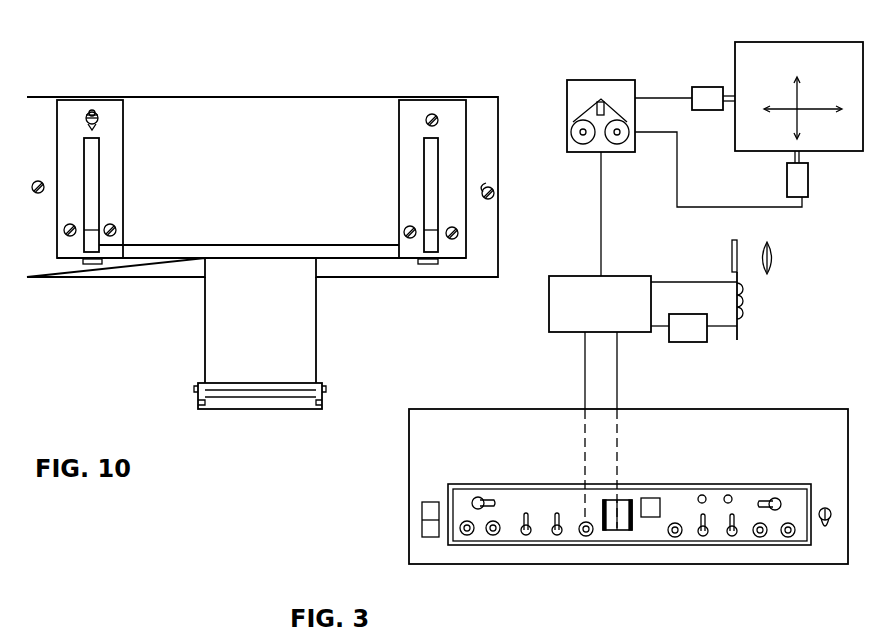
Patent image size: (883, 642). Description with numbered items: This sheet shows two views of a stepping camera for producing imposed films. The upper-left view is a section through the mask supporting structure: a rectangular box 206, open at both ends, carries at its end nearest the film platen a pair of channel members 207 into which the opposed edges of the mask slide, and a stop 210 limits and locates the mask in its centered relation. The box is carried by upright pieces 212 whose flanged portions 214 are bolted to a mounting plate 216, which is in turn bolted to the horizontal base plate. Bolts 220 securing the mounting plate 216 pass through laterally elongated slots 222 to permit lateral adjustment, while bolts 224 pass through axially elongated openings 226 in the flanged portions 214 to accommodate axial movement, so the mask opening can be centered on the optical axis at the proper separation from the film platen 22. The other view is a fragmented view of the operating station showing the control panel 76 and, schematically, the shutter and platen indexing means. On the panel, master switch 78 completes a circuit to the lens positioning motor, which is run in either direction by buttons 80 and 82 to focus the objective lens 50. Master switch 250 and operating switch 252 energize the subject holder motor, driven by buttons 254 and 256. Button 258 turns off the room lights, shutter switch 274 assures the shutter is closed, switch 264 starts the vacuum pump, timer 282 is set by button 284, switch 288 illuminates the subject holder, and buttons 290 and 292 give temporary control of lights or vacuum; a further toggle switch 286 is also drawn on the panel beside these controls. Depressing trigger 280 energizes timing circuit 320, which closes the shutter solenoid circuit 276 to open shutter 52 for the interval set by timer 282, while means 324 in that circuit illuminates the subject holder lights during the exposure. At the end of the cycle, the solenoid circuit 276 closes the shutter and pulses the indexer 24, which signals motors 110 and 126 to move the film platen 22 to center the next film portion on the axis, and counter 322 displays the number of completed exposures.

In FIG. 3, the film platen 22 is at (782, 40).
In FIG. 3, the indexer 24 is at (598, 80).
In FIG. 3, the platen drive motor 126 is at (710, 87).
In FIG. 3, the platen drive motor 110 is at (808, 183).
In FIG. 3, the timing circuit 320 is at (562, 333).
In FIG. 3, the shutter 52 is at (731, 245).
In FIG. 3, the objective lens 50 is at (778, 252).
In FIG. 3, the shutter solenoid circuit 276 is at (745, 316).
In FIG. 3, the light control means 324 is at (692, 342).
In FIG. 3, the control panel 76 is at (487, 408).
In FIG. 3, the master switch 78 is at (475, 497).
In FIG. 3, the button 258 is at (421, 527).
In FIG. 3, the button 80 is at (463, 538).
In FIG. 3, the button 82 is at (492, 538).
In FIG. 3, the switch 264 is at (523, 520).
In FIG. 3, the shutter switch 274 is at (556, 538).
In FIG. 3, the trigger 280 is at (581, 520).
In FIG. 3, the timer 282 is at (618, 533).
In FIG. 3, the counter 322 is at (643, 498).
In FIG. 3, the button 290 is at (702, 494).
In FIG. 3, the button 292 is at (728, 494).
In FIG. 3, the switch 288 is at (700, 515).
In FIG. 3, the toggle switch 286 is at (732, 536).
In FIG. 3, the operating switch 252 is at (768, 500).
In FIG. 3, the button 284 is at (675, 538).
In FIG. 3, the button 254 is at (760, 538).
In FIG. 3, the button 256 is at (788, 538).
In FIG. 3, the master switch 250 is at (825, 529).
In FIG. 10, the mounting plate 216 is at (320, 98).
In FIG. 10, the flanged portion 214 is at (120, 137).
In FIG. 10, the upright piece 212 is at (97, 203).
In FIG. 10, the axially elongated opening 226 is at (92, 110).
In FIG. 10, the bolt 224 is at (98, 115).
In FIG. 10, the bolt 220 is at (44, 184).
In FIG. 10, the laterally elongated slot 222 is at (487, 182).
In FIG. 10, the box 206 is at (205, 331).
In FIG. 10, the stop 210 is at (255, 410).
In FIG. 10, the channel member 207 is at (197, 398).